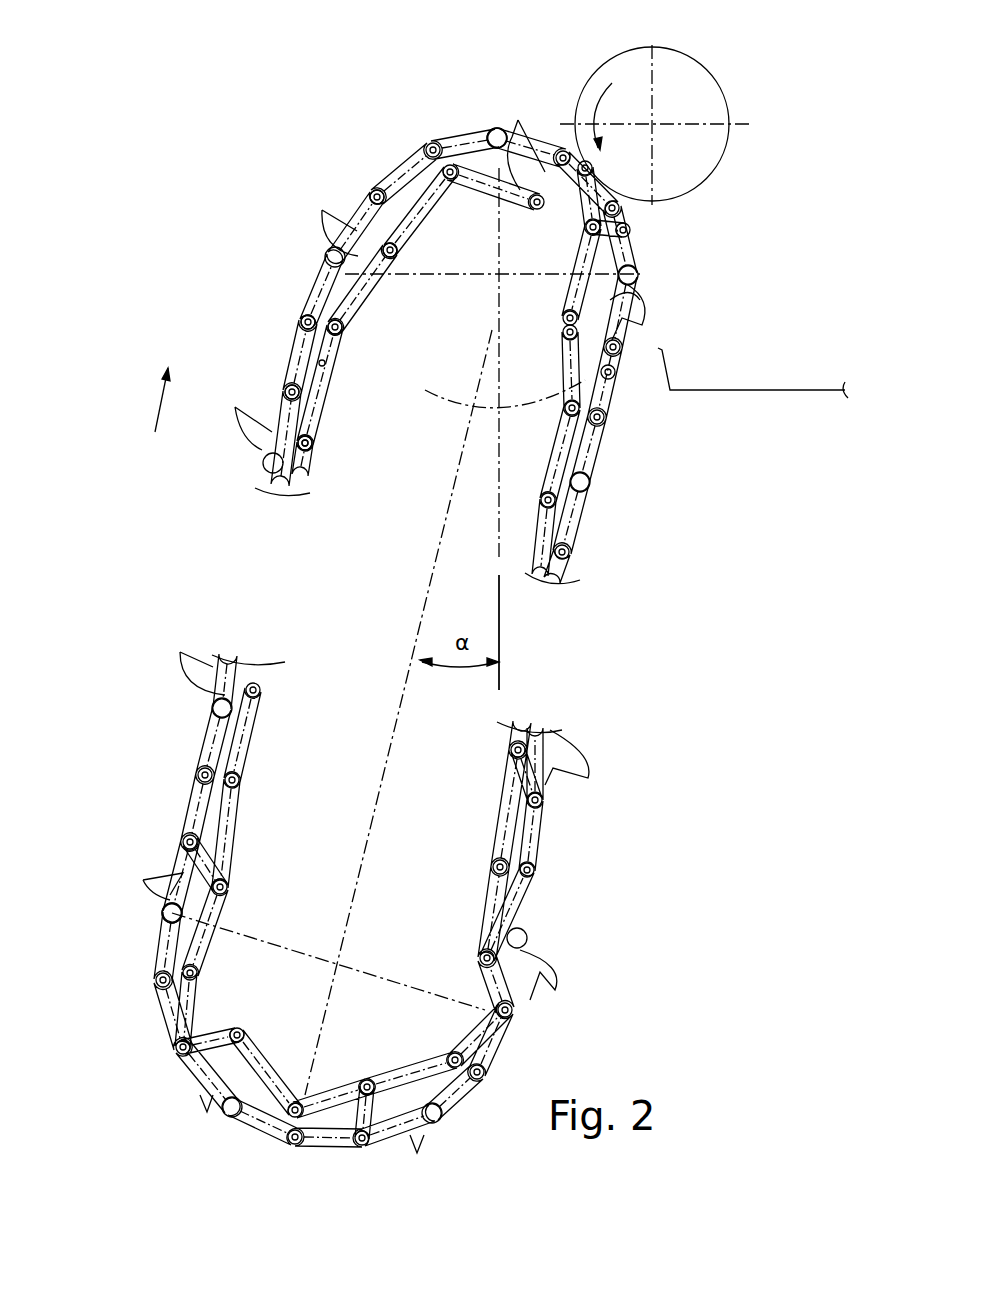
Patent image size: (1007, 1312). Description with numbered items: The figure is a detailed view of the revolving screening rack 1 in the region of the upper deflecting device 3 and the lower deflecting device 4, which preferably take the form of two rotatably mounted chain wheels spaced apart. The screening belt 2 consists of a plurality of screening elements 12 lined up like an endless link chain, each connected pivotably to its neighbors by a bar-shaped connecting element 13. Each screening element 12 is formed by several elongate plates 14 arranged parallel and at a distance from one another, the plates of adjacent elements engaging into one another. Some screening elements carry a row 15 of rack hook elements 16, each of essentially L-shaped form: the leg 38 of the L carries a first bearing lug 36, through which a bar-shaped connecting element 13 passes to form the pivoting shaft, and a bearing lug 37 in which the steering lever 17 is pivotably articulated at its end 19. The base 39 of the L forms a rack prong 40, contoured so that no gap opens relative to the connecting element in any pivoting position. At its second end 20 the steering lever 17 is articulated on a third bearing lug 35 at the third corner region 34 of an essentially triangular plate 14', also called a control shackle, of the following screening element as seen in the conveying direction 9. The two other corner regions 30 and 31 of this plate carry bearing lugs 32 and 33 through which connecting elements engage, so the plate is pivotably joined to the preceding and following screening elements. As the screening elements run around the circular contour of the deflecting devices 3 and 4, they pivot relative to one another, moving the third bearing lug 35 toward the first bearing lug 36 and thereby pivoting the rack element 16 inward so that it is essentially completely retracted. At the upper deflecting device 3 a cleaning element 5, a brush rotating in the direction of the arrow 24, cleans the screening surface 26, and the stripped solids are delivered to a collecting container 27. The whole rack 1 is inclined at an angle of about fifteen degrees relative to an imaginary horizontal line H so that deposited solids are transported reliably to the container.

The revolving screening rack 1 is at (135, 215).
The screening belt 2 is at (615, 456).
The upper deflecting device 3 is at (520, 388).
The lower deflecting device 4 is at (410, 945).
The cleaning element 5 is at (690, 90).
The conveying direction 9 is at (158, 405).
The screening element 12 is at (365, 290).
The bar-shaped connecting element 13 is at (392, 200).
The elongate plate 14 is at (283, 312).
The control shackle plate 14' is at (341, 389).
The row of rack hook elements 15 is at (350, 200).
The rack hook element 16 is at (344, 198).
The steering lever 17 is at (488, 276).
The first end of steering lever 19 is at (400, 243).
The second end of steering lever 20 is at (380, 310).
The direction of brush rotation arrow 24 is at (597, 100).
The screening surface 26 is at (645, 248).
The collecting container 27 is at (765, 392).
The first corner region 30 is at (295, 285).
The second corner region 31 is at (283, 390).
The bearing lug 32 is at (300, 312).
The bearing lug 33 is at (305, 405).
The third corner region 34 is at (360, 315).
The third bearing lug 35 is at (378, 320).
The first bearing lug of rack element 36 is at (463, 133).
The bearing lug of rack element 37 is at (398, 240).
The leg of the L 38 is at (213, 853).
The base of the L 39 is at (148, 880).
The rack prong 40 is at (158, 893).
The imaginary horizontal line H is at (500, 625).